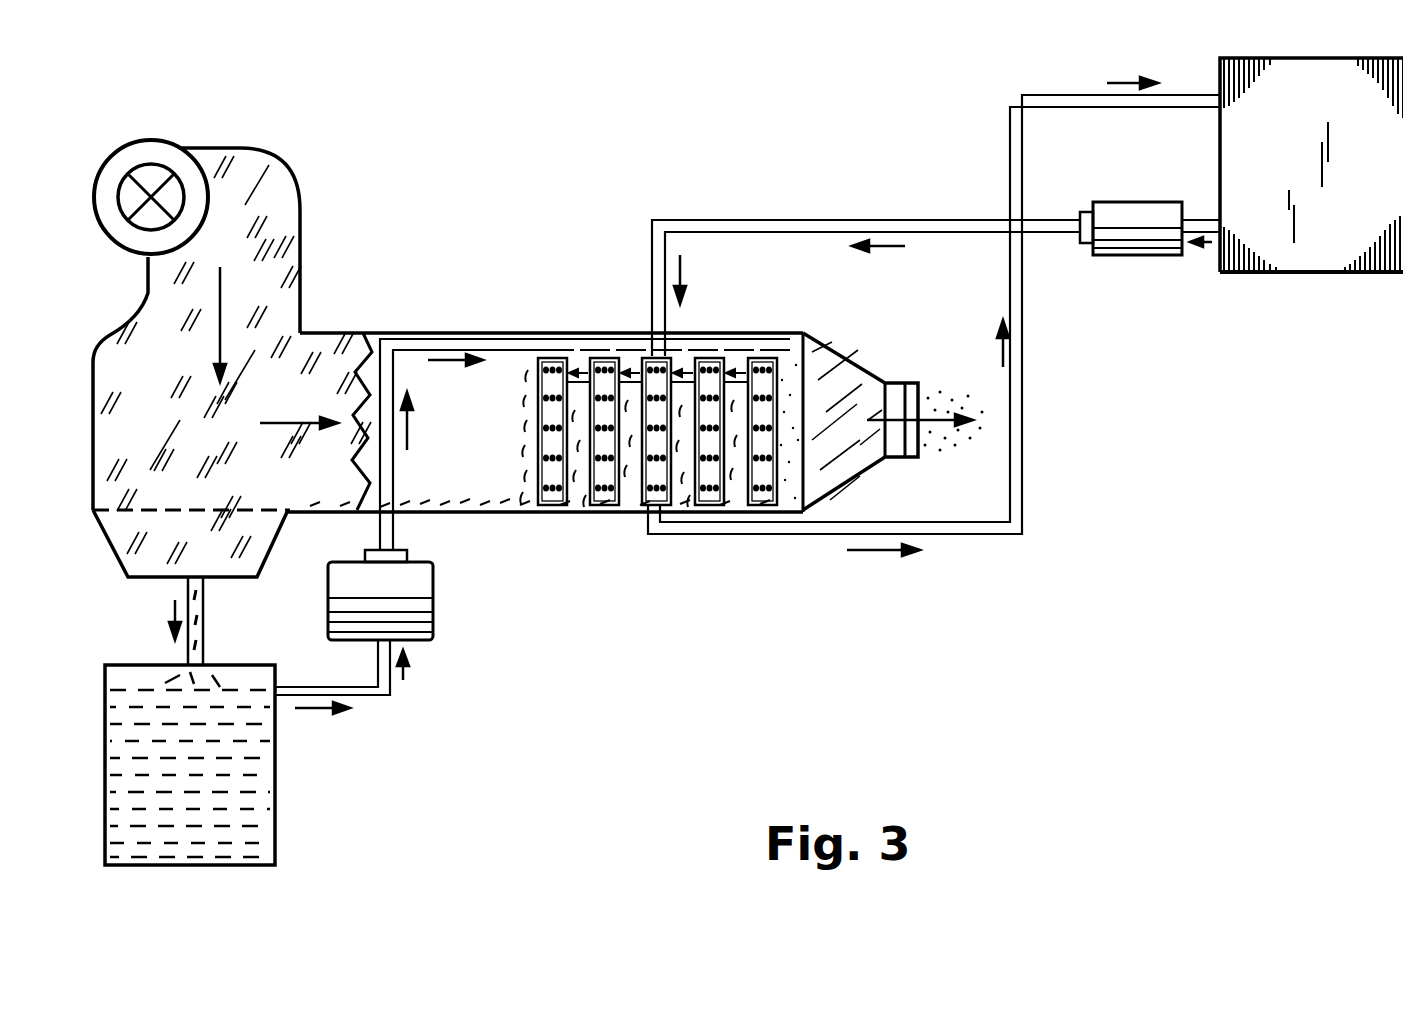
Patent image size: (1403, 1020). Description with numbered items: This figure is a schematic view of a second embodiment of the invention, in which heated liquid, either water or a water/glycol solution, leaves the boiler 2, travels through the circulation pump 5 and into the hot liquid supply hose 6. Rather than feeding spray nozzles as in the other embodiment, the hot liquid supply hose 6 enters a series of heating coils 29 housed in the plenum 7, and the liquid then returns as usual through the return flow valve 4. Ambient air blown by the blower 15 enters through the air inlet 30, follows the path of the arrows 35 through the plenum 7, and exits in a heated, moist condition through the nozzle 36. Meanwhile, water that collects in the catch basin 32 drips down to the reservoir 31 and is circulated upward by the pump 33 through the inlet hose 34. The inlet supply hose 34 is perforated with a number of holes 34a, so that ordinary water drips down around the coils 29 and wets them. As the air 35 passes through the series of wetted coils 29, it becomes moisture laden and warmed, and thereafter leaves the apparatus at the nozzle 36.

The boiler 2 is at (1220, 58).
The return flow valve 4 is at (1022, 355).
The circulation pump 5 is at (1100, 202).
The hot liquid supply hose 6 is at (783, 220).
The plenum 7 is at (410, 333).
The blower 15 is at (152, 137).
The heating coils 29 is at (643, 357).
The air inlet 30 is at (277, 195).
The reservoir 31 is at (275, 775).
The catch basin 32 is at (113, 548).
The pump 33 is at (433, 572).
The inlet hose 34 is at (513, 348).
The holes 34a is at (697, 333).
The arrows 35 is at (282, 423).
The nozzle 36 is at (923, 392).